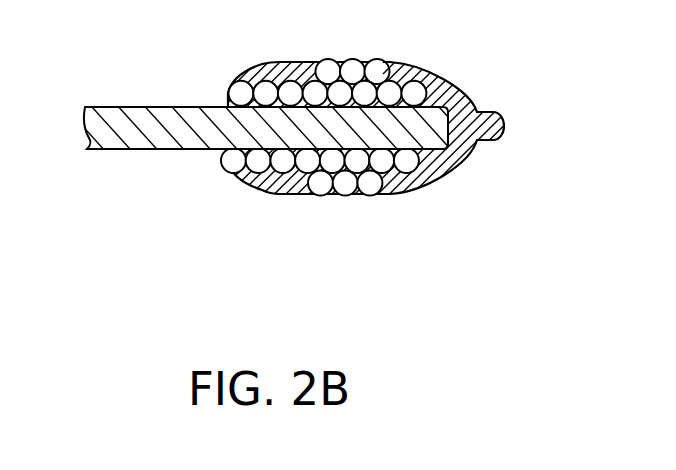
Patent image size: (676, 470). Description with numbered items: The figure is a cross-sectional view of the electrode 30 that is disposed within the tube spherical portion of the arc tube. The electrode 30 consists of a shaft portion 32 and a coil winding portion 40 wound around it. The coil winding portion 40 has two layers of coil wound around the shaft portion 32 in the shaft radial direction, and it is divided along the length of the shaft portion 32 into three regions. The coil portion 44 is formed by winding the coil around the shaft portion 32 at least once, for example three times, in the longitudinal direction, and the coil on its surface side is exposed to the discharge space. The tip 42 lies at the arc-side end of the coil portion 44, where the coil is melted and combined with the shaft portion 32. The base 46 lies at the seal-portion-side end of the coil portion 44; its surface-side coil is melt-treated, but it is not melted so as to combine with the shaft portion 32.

The electrode 30 is at (298, 138).
The shaft portion 32 is at (153, 107).
The coil winding portion 40 is at (363, 165).
The tip 42 is at (445, 148).
The coil portion 44 is at (380, 197).
The base 46 is at (302, 197).